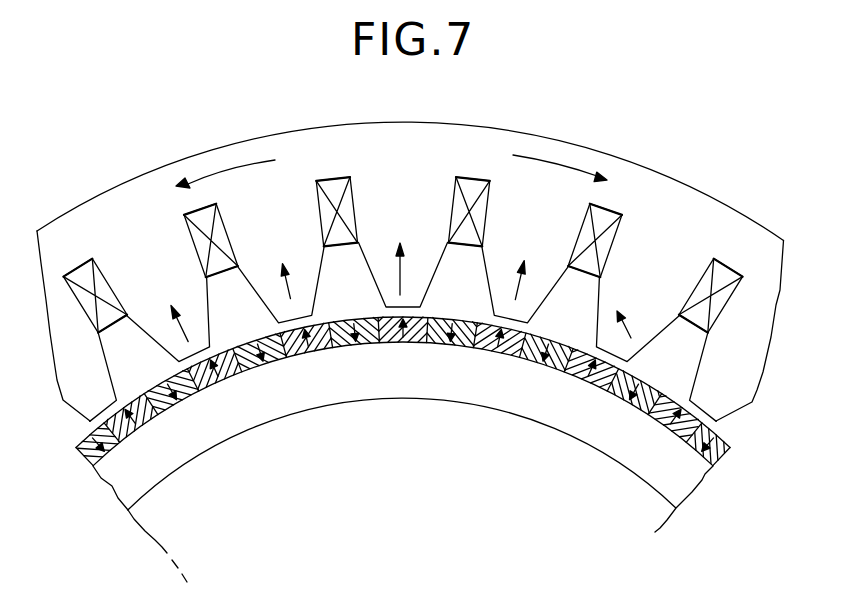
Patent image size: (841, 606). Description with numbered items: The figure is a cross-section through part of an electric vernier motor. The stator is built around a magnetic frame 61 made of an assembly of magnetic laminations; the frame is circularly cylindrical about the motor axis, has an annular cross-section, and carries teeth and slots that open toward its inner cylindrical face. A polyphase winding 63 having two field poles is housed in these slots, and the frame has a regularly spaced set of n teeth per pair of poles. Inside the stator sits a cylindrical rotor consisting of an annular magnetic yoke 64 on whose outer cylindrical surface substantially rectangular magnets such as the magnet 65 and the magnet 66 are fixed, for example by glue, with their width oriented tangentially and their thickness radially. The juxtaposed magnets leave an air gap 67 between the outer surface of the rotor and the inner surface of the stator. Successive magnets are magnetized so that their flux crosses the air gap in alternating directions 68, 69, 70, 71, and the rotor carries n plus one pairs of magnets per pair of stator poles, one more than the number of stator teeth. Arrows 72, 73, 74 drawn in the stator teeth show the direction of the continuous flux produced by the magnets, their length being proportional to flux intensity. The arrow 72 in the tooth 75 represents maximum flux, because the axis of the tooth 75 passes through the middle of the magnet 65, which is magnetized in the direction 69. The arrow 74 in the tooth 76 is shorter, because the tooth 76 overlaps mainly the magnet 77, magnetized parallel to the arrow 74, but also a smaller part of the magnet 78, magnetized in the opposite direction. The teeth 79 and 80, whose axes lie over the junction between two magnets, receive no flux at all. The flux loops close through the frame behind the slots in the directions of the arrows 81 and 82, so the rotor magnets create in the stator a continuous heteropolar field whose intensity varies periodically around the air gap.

The magnetic frame 61 is at (433, 145).
The polyphase winding 63 is at (335, 188).
The magnetic yoke 64 is at (276, 410).
The magnet 65 is at (386, 349).
The magnet 66 is at (440, 332).
The air gap 67 is at (288, 325).
The magnetization direction 68 is at (352, 333).
The magnetization direction 69 is at (415, 349).
The magnetization direction 70 is at (462, 349).
The magnetization direction 71 is at (510, 349).
The arrow 72 is at (403, 275).
The arrow 73 is at (525, 283).
The arrow 74 is at (630, 330).
The tooth 75 is at (394, 297).
The tooth 76 is at (608, 342).
The magnet 77 is at (600, 374).
The magnet 78 is at (642, 397).
The tooth 79 is at (708, 402).
The tooth 80 is at (94, 400).
The arrow 81 is at (557, 162).
The arrow 82 is at (222, 173).